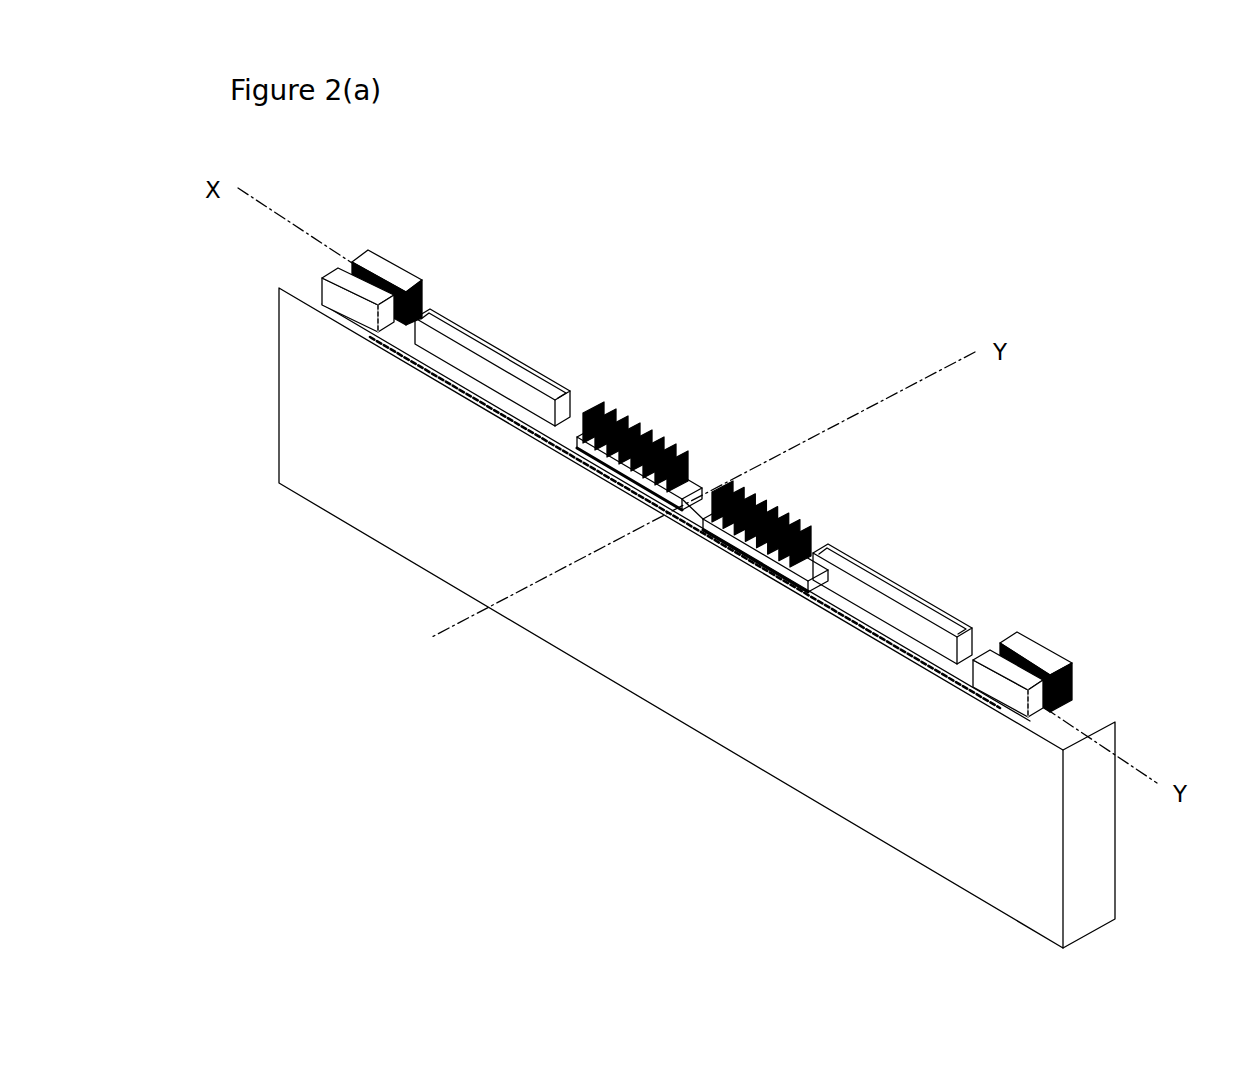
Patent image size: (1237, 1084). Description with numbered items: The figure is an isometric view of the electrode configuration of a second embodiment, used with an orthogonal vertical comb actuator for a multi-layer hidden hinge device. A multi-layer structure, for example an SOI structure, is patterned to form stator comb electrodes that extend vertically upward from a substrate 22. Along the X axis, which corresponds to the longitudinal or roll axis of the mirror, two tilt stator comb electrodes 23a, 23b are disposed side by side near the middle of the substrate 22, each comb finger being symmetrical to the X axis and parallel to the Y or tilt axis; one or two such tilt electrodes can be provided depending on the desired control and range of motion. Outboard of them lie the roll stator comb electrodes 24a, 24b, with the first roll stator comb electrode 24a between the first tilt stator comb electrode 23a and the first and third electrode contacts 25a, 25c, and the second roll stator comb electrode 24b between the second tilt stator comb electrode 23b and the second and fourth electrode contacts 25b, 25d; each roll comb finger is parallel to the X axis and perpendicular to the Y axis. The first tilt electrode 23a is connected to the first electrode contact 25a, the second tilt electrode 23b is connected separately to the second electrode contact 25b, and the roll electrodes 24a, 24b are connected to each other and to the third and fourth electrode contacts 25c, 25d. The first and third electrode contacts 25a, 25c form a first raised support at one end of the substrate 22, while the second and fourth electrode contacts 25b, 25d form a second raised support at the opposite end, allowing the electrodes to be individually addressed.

The substrate 22 is at (1090, 717).
The first tilt stator comb electrode 23a is at (645, 432).
The second tilt stator comb electrode 23b is at (768, 497).
The first roll stator comb electrode 24a is at (500, 360).
The second roll stator comb electrode 24b is at (885, 585).
The first electrode contact 25a is at (385, 258).
The second electrode contact 25b is at (1040, 655).
The third electrode contact 25c is at (325, 278).
The fourth electrode contact 25d is at (988, 662).